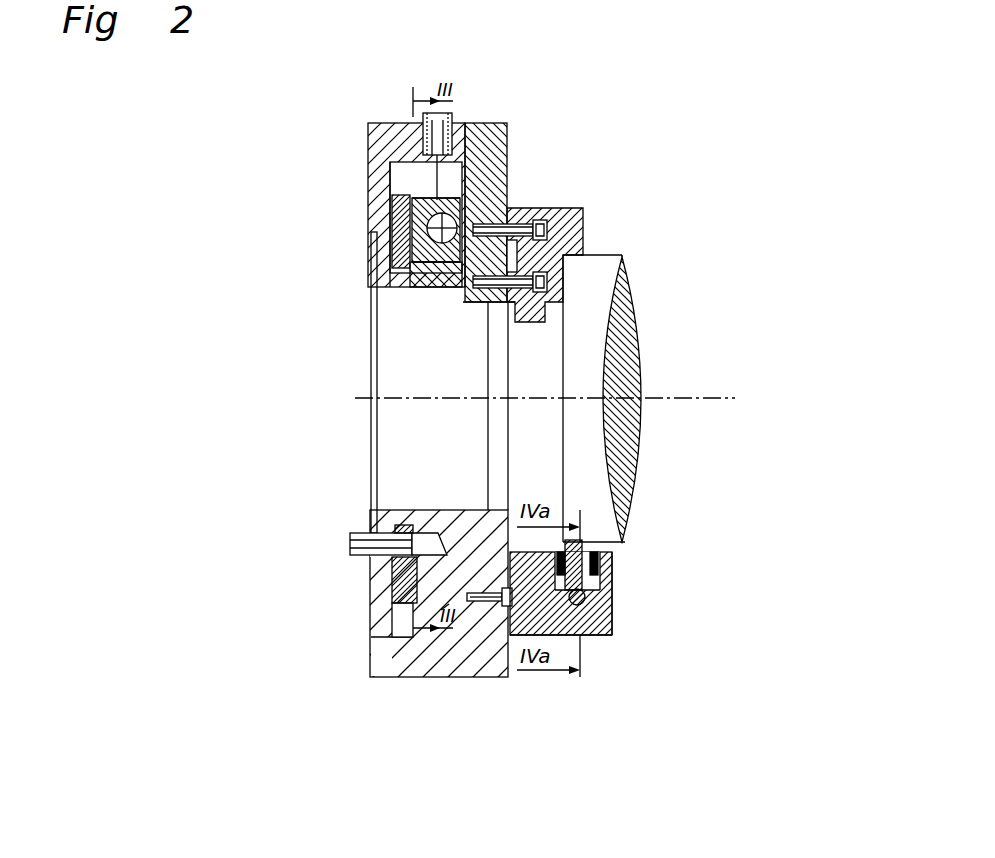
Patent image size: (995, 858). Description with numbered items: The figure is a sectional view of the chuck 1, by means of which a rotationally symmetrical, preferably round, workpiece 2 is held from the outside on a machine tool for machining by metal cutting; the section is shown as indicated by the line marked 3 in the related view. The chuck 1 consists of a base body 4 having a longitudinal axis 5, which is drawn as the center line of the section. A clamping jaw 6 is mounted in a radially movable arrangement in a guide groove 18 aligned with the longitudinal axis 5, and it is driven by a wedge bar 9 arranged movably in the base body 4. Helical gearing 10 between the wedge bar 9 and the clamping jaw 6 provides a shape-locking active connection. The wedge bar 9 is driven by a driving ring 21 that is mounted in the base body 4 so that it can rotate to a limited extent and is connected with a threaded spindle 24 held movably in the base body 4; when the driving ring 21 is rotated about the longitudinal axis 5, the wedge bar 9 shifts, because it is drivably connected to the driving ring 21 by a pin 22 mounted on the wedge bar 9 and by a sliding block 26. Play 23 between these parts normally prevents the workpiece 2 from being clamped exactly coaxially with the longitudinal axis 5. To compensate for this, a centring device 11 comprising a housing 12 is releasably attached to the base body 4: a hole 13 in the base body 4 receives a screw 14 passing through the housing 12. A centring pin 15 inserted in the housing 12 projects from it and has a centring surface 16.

The chuck 1 is at (565, 114).
The workpiece 2 is at (595, 335).
The shaft 3 is at (593, 252).
The base body 4 is at (395, 147).
The longitudinal axis 5 is at (710, 396).
The clamping jaw 6 is at (555, 230).
The wedge bar 9 is at (415, 197).
The helical gearing 10 is at (410, 287).
The centring device 11 is at (613, 583).
The housing 12 is at (613, 625).
The hole 13 is at (445, 608).
The screw 14 is at (477, 600).
The centring pin 15 is at (613, 557).
The centring surface 16 is at (592, 542).
The guide groove 18 is at (486, 125).
The driving ring 21 is at (402, 578).
The pin 22 is at (392, 247).
The play 23 is at (400, 527).
The threaded spindle 24 is at (372, 230).
The sliding block 26 is at (410, 205).